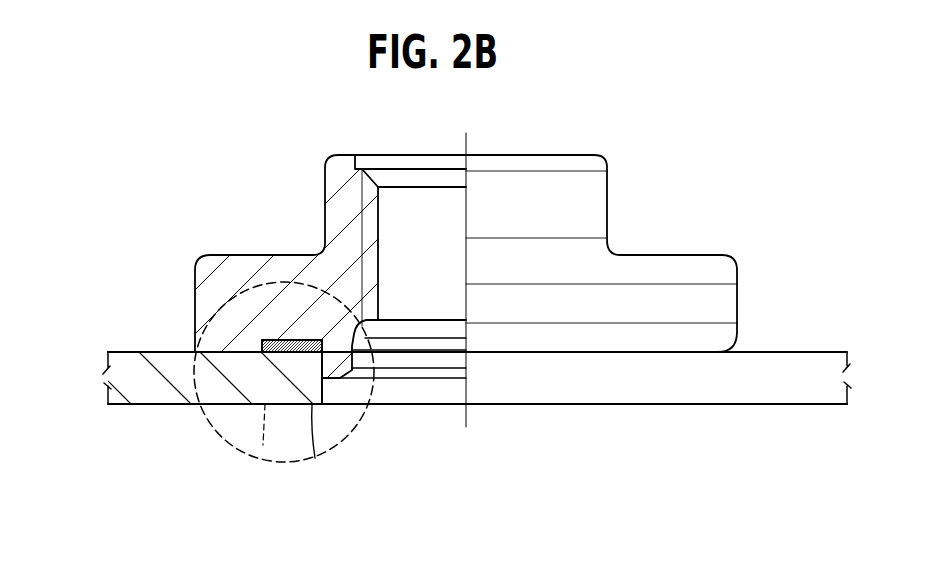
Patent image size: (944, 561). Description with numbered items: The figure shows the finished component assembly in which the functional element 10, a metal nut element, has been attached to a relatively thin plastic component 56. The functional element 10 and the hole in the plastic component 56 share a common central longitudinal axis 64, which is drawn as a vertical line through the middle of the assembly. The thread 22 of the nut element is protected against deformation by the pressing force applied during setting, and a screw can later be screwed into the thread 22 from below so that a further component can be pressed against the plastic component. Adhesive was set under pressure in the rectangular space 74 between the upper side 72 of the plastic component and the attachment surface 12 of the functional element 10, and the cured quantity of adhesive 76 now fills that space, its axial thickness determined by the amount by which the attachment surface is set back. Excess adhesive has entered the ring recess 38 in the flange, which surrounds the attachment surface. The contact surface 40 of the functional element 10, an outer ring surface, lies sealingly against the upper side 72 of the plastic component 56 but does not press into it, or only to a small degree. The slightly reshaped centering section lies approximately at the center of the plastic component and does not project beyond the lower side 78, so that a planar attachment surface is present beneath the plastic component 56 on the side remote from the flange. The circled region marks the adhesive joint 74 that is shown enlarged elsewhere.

The functional element 10 is at (624, 196).
The thread 22 is at (370, 223).
The ring recess 38 is at (268, 342).
The attachment surface 12 is at (323, 347).
The plastic component 56 is at (138, 418).
The upper side of the plastic component 72 is at (163, 351).
The contact surface 40 is at (210, 416).
The rectangular space 74 is at (258, 461).
The cured quantity of adhesive 76 is at (315, 458).
The central longitudinal axis 64 is at (467, 418).
The lower side of the plastic component 78 is at (723, 405).